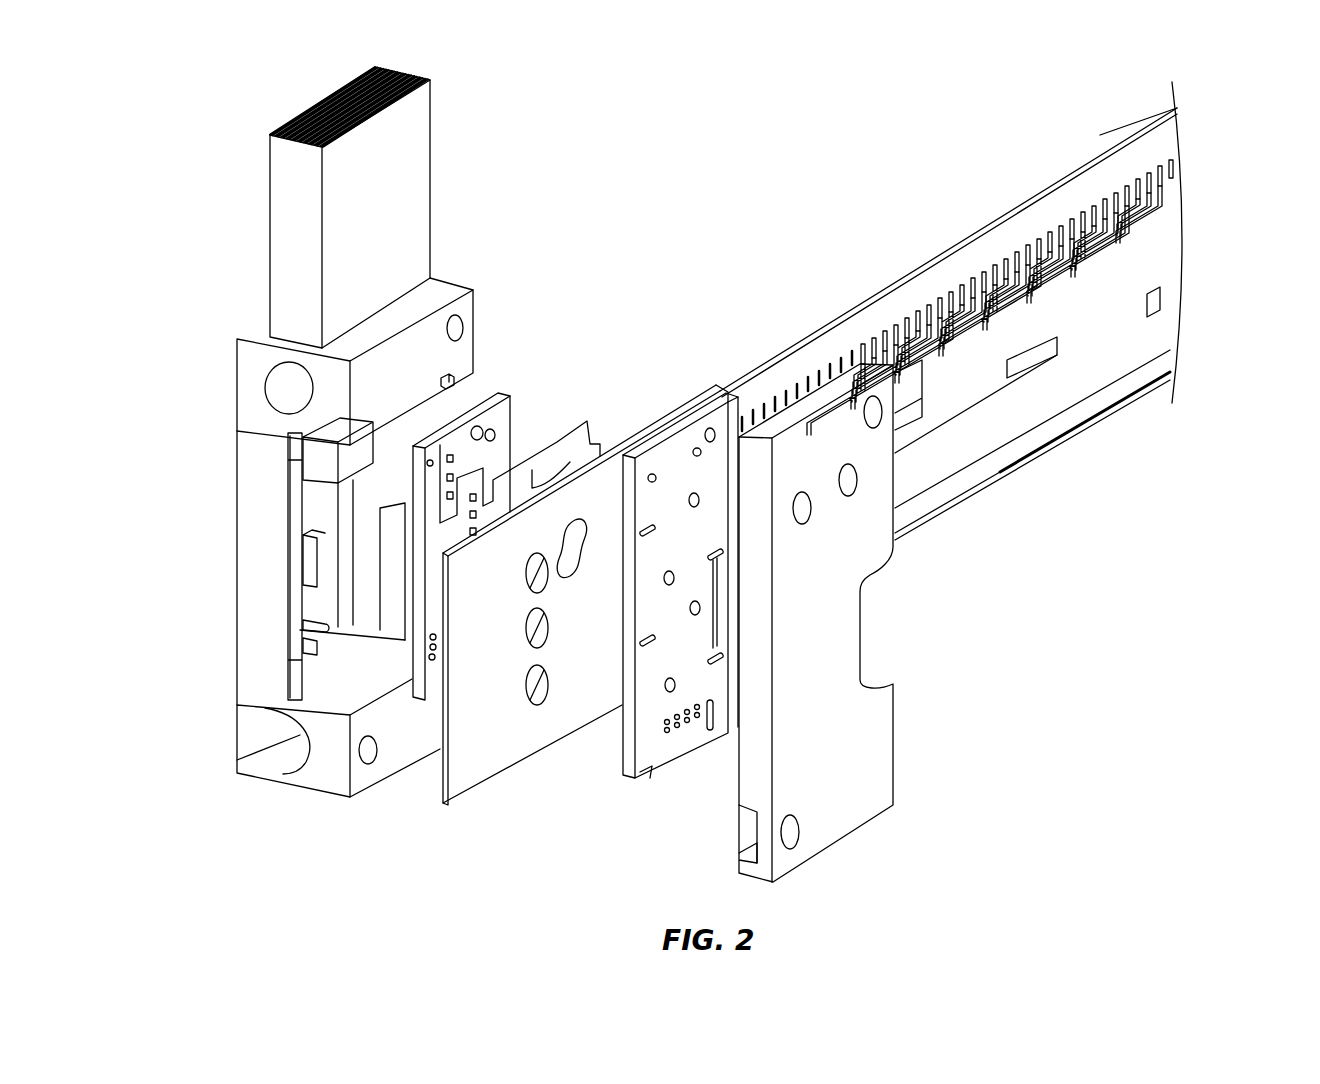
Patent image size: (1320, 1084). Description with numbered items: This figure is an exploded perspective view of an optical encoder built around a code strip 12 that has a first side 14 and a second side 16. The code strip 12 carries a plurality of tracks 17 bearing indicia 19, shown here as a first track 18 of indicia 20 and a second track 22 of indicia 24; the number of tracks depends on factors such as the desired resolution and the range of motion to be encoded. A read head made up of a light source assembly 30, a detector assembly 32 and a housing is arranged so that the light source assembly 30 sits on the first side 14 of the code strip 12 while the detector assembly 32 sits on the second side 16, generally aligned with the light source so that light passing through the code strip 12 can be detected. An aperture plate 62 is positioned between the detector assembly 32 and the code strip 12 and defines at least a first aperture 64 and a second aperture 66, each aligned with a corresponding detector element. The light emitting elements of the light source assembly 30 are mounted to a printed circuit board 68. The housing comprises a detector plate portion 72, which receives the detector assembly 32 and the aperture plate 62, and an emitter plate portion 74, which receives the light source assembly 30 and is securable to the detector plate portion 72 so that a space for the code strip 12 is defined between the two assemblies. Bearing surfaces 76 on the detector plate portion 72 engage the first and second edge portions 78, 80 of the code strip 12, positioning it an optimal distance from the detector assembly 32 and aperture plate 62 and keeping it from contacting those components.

The code strip 12 is at (1040, 188).
The first side 14 is at (1152, 367).
The second side 16 is at (873, 300).
The tracks 17 is at (1040, 304).
The first track 18 is at (1182, 170).
The indicia 19 is at (923, 397).
The indicia 20 is at (1168, 188).
The second track 22 is at (1172, 216).
The indicia 24 is at (1132, 244).
The light source assembly 30 is at (708, 400).
The detector assembly 32 is at (503, 397).
The aperture plate 62 is at (558, 438).
The first aperture 64 is at (586, 421).
The second aperture 66 is at (563, 547).
The printed circuit board 68 is at (680, 770).
The detector plate portion 72 is at (232, 350).
The emitter plate portion 74 is at (830, 852).
The bearing surfaces 76 is at (290, 440).
The first edge portion 78 is at (1148, 124).
The second edge portion 80 is at (1023, 470).